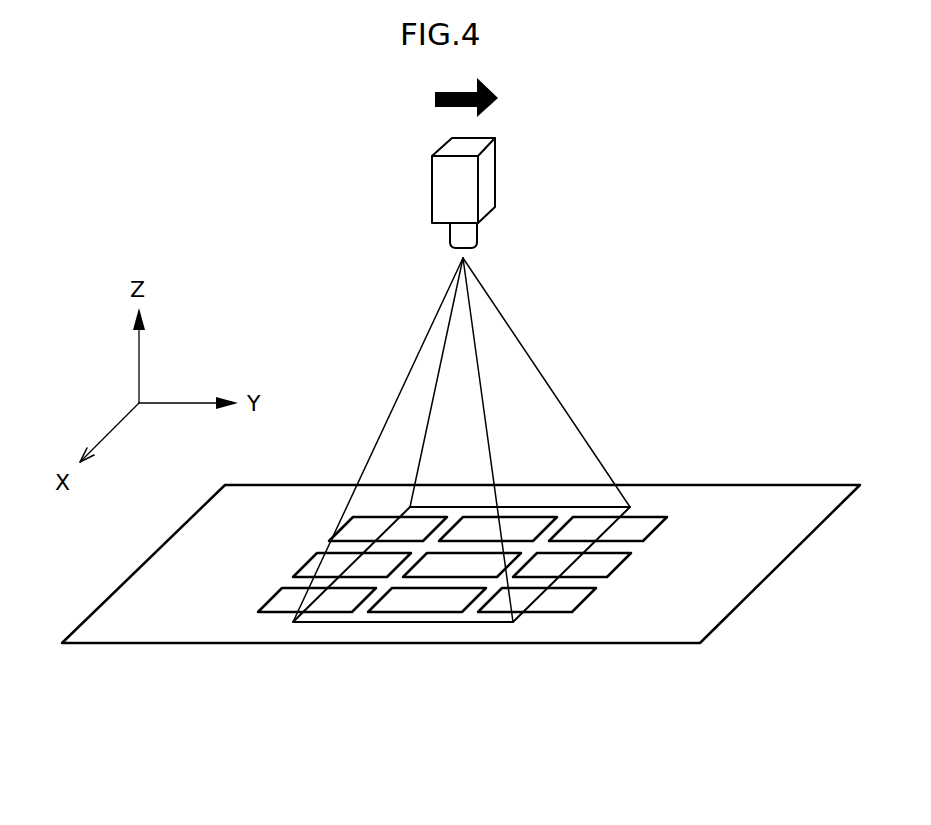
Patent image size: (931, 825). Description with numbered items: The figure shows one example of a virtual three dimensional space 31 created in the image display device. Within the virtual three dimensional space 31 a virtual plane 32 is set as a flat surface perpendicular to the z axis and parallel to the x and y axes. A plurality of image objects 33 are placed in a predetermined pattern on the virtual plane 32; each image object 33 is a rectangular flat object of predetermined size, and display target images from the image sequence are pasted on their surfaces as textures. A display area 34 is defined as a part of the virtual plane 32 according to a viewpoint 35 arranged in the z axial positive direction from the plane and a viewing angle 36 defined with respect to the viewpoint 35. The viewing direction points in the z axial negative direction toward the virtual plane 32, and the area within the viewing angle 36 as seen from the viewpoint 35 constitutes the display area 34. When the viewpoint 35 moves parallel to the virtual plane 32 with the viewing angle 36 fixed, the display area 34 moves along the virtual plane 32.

The virtual three dimensional space 31 is at (608, 682).
The virtual plane 32 is at (745, 602).
The image objects 33 is at (344, 526).
The display area 34 is at (403, 623).
The viewpoint 35 is at (490, 177).
The viewing angle 36 is at (541, 373).